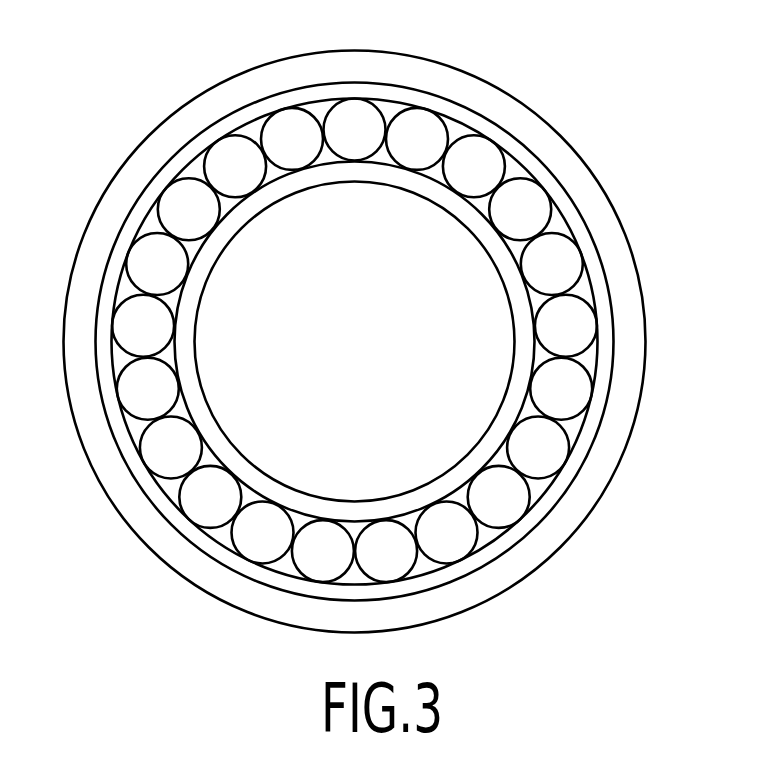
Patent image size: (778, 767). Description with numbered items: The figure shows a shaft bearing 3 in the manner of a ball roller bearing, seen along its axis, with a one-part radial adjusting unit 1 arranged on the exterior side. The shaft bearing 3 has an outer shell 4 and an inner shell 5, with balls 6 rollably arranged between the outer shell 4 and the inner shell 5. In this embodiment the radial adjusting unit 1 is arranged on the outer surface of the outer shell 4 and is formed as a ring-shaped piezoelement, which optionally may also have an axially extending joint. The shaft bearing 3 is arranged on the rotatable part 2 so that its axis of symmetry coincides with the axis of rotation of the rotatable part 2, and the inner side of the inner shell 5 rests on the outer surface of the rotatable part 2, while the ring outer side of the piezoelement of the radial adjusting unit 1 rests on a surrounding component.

The radial adjusting unit 1 is at (340, 67).
The rotatable part 2 is at (331, 378).
The shaft bearing 3 is at (345, 318).
The outer shell 4 is at (380, 90).
The inner shell 5 is at (513, 273).
The balls 6 is at (470, 173).